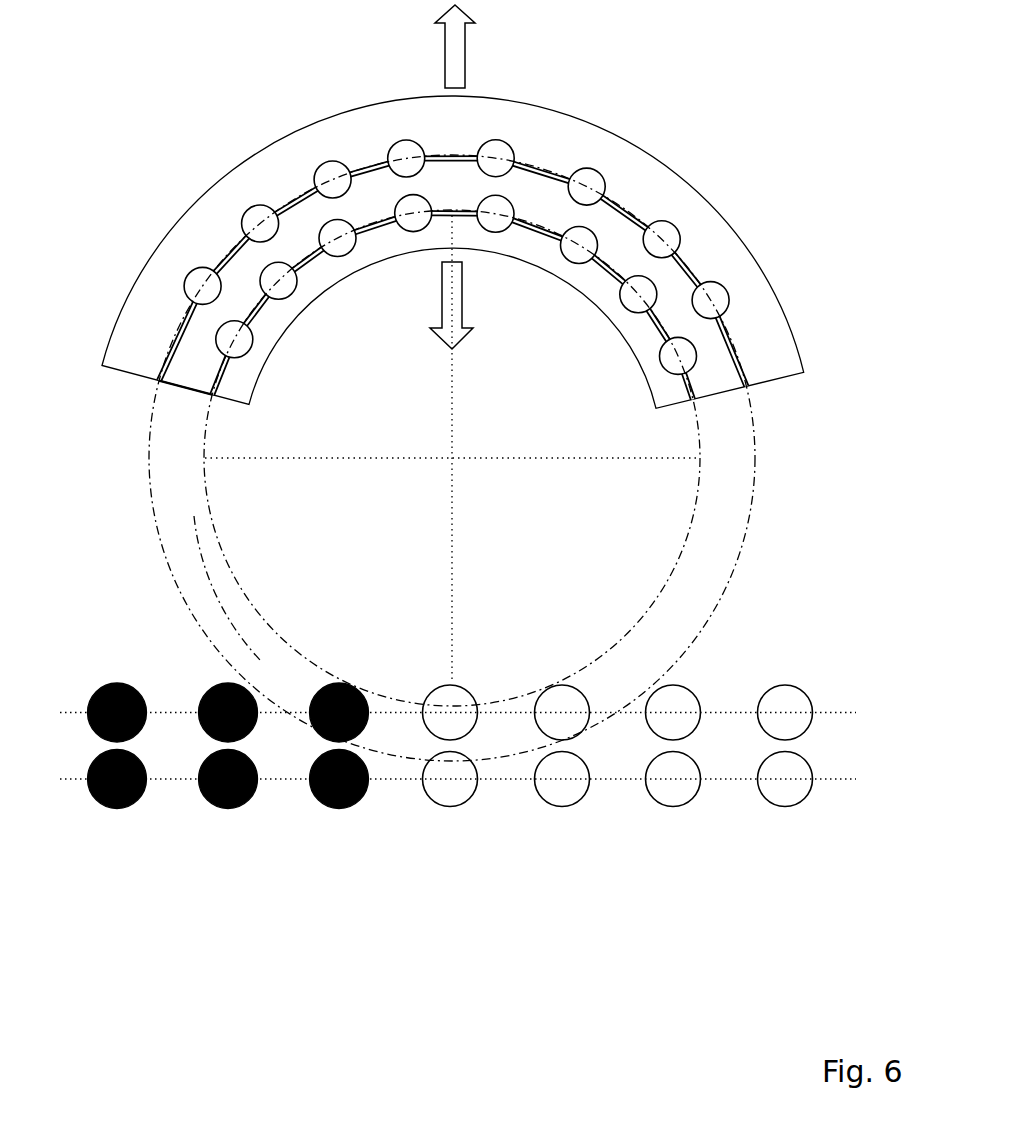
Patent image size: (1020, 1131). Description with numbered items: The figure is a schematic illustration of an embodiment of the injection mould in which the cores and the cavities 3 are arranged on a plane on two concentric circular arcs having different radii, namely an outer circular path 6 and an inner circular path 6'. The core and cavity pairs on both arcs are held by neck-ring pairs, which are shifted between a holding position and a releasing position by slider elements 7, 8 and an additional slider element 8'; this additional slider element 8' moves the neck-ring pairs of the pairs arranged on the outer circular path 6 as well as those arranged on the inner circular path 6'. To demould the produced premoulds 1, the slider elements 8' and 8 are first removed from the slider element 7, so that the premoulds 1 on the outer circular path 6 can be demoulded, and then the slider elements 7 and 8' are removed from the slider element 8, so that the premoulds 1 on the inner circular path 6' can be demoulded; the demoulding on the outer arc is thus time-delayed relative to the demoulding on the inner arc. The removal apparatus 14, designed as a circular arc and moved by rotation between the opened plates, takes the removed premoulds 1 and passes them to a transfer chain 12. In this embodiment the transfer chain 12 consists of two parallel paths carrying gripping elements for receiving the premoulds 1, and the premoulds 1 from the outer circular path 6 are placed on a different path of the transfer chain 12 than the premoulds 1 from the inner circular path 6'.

The premould 1 is at (352, 808).
The cavity 3 is at (327, 183).
The outer circular path 6 is at (504, 458).
The inner circular path 6' is at (521, 458).
The slider element 7 is at (160, 330).
The slider element 8 is at (411, 346).
The additional slider element 8' is at (413, 309).
The transfer chain 12 is at (549, 811).
The removal apparatus 14 is at (224, 544).